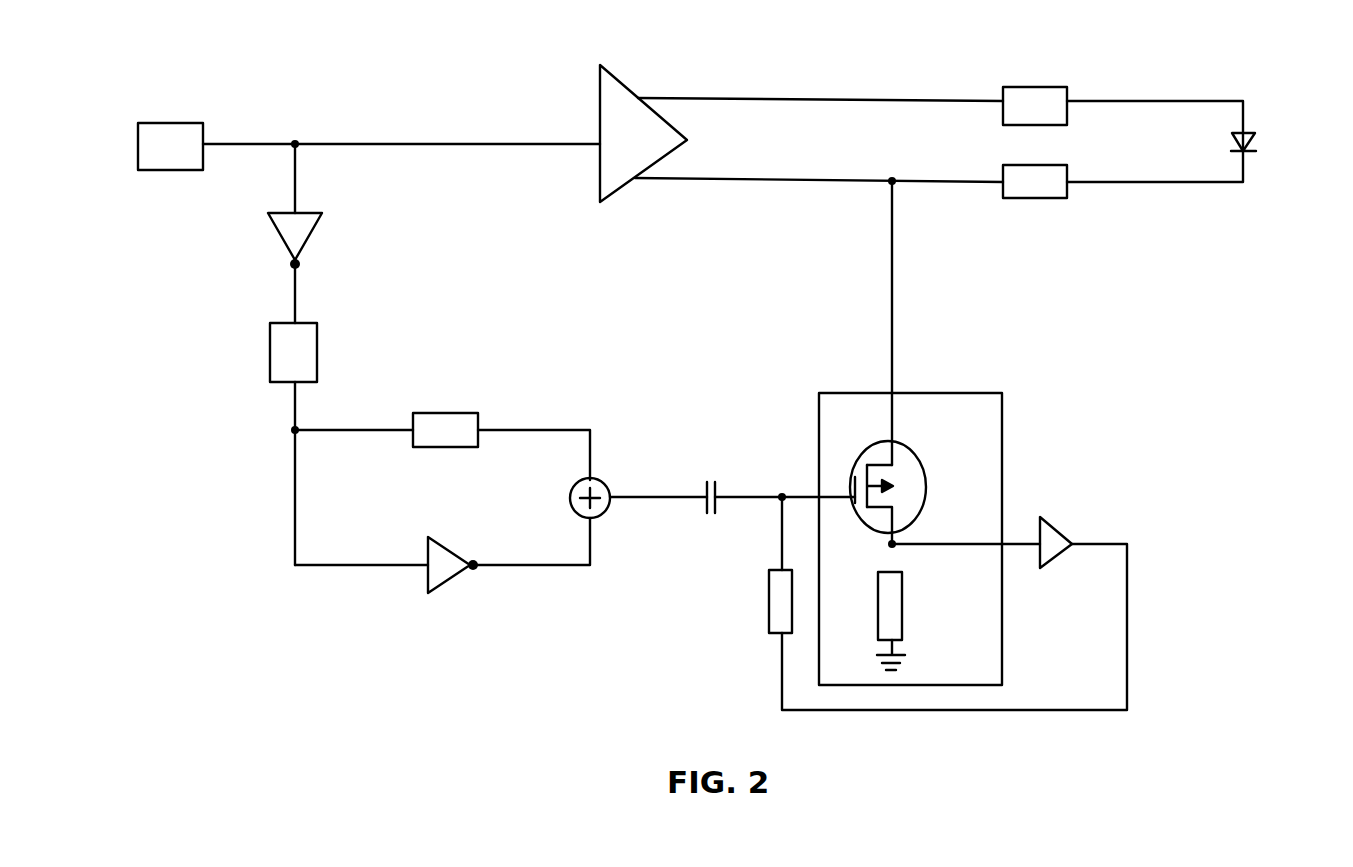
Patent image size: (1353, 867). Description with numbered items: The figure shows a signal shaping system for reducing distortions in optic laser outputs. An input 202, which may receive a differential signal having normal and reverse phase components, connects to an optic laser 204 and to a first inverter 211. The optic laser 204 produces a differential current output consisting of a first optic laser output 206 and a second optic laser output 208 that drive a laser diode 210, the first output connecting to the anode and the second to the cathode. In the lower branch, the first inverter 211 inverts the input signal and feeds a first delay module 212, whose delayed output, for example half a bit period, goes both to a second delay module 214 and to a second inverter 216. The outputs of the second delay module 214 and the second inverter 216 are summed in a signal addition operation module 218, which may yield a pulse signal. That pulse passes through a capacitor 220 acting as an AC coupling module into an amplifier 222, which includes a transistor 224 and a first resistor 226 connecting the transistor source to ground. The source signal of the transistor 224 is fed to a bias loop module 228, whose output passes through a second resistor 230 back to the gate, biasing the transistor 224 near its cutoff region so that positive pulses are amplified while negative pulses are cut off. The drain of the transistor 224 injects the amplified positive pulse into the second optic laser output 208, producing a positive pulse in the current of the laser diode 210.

The input 202 is at (200, 123).
The optic laser 204 is at (633, 87).
The first optic laser output 206 is at (1045, 87).
The second optic laser output 208 is at (1040, 198).
The laser diode 210 is at (1248, 133).
The first inverter 211 is at (312, 245).
The first delay module 212 is at (317, 360).
The second delay module 214 is at (455, 413).
The second inverter 216 is at (450, 582).
The signal addition operation module 218 is at (603, 483).
The capacitor 220 is at (710, 516).
The amplifier 222 is at (1002, 393).
The transistor 224 is at (920, 455).
The first resistor 226 is at (902, 622).
The bias loop module 228 is at (1062, 532).
The second resistor 230 is at (769, 600).